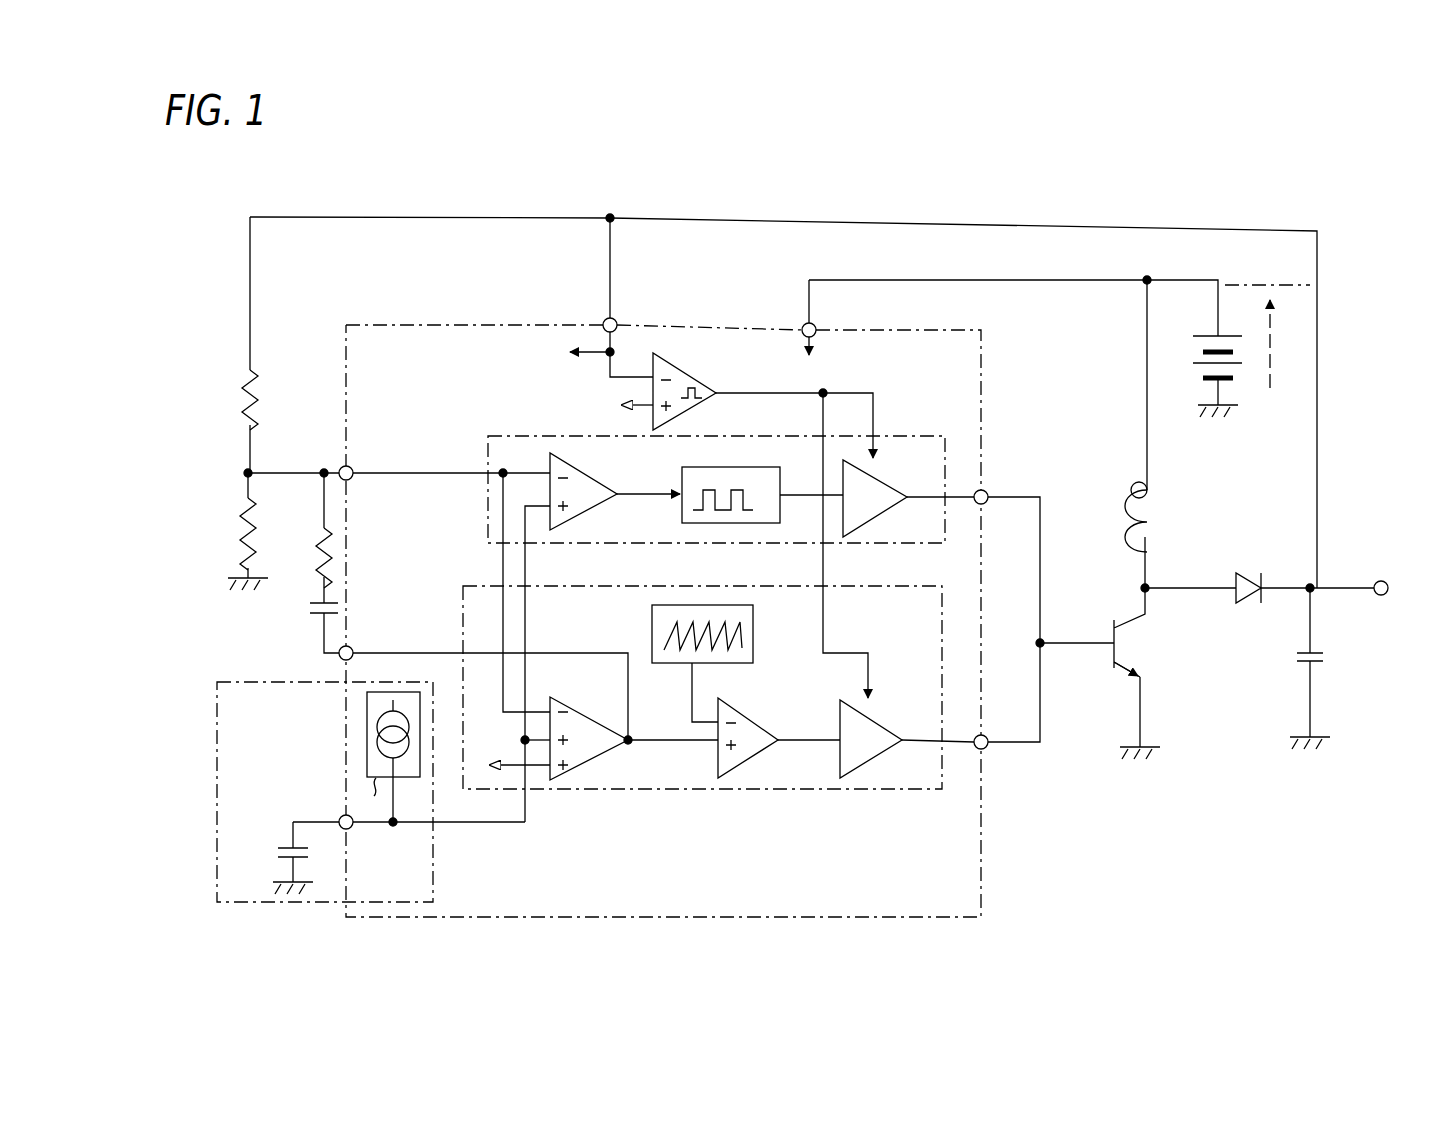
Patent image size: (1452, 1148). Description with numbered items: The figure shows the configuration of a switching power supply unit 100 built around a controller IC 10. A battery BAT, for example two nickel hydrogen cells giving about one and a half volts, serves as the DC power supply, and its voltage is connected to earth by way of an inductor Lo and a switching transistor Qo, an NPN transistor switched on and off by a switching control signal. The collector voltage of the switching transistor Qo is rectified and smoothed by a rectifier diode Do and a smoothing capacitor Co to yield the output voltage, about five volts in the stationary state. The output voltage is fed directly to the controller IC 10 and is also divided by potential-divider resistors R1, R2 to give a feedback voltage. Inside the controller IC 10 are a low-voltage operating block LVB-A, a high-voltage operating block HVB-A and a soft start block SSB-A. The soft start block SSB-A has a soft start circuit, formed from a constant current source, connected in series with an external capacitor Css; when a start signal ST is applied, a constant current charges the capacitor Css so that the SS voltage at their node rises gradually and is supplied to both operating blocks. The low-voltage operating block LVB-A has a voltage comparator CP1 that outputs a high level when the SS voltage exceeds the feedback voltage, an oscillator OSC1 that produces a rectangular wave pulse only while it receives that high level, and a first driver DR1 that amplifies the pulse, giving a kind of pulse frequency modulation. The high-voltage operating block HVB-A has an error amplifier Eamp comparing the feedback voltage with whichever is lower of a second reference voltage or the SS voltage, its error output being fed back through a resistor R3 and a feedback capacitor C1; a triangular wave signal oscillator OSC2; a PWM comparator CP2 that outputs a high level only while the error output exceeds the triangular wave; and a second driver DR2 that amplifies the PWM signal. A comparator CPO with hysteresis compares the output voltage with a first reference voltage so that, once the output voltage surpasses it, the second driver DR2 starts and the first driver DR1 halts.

The switching power supply unit 100 is at (1034, 204).
The controller IC 10 is at (983, 378).
The potential-divider resistor R1 is at (226, 400).
The potential-divider resistor R2 is at (225, 534).
The resistor R3 is at (305, 558).
The feedback capacitor C1 is at (309, 606).
The capacitor Css is at (311, 853).
The start signal ST is at (460, 720).
The battery BAT is at (1197, 370).
The inductor Lo is at (1158, 517).
The rectifier diode Do is at (1249, 573).
The smoothing capacitor Co is at (1294, 655).
The switching transistor Qo is at (1136, 632).
The comparator CPO is at (698, 391).
The voltage comparator CP1 is at (588, 490).
The PWM comparator CP2 is at (752, 738).
The oscillator OSC1 is at (700, 468).
The triangular wave signal oscillator OSC2 is at (652, 632).
The first driver DR1 is at (885, 498).
The second driver DR2 is at (881, 739).
The error amplifier Eamp is at (589, 733).
The low-voltage operating block LVB-A is at (500, 436).
The high-voltage operating block HVB-A is at (463, 635).
The soft start block SSB-A is at (433, 870).